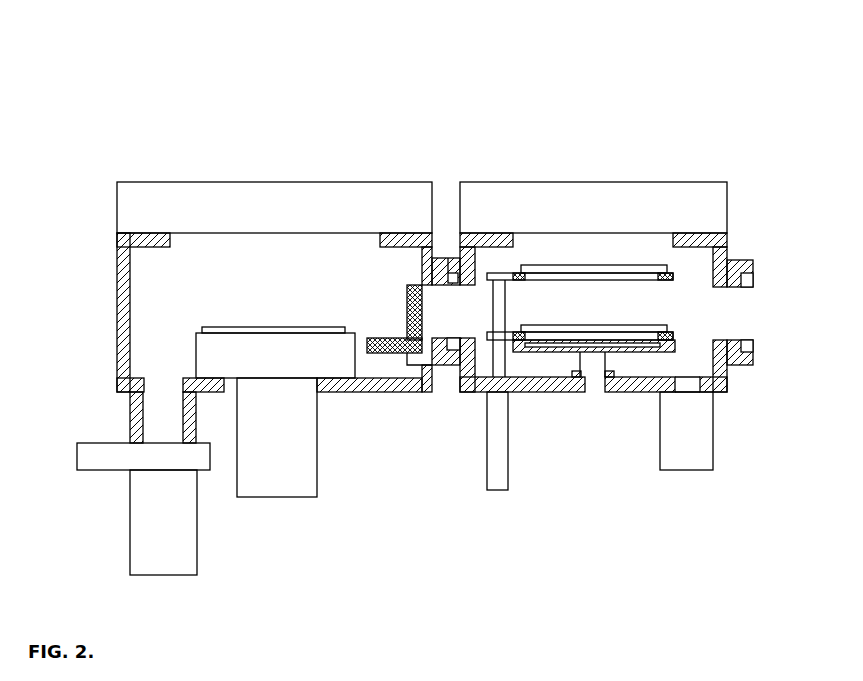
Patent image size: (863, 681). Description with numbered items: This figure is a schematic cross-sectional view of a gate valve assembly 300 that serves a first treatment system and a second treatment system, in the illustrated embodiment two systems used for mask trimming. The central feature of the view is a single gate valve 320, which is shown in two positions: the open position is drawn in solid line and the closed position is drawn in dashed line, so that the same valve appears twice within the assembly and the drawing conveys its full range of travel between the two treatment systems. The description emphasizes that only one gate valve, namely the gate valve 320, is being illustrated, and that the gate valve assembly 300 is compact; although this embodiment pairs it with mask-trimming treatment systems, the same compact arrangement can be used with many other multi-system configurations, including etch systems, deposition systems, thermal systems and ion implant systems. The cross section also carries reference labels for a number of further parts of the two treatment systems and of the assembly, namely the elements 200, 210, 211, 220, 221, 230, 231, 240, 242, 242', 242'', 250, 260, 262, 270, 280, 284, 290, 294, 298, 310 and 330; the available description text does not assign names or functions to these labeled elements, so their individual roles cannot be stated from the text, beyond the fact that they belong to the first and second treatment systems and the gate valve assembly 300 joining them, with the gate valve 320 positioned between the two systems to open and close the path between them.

The processing system 200 is at (462, 98).
The first lid 210 is at (301, 142).
The first chamber body 211 is at (117, 247).
The second lid 220 is at (604, 141).
The second chamber body flange 221 is at (730, 250).
The gas passage 230 is at (448, 258).
The lower flange port 231 is at (750, 366).
The substrate support 240 is at (210, 352).
The substrate 242 is at (273, 307).
The substrate on lower support 242' is at (580, 312).
The substrate on upper support 242'' is at (580, 258).
The lift assembly 250 is at (117, 510).
The first processing region 260 is at (243, 202).
The first processing volume 262 is at (245, 277).
The heater 270 is at (637, 352).
The support shaft 280 is at (698, 435).
The second processing region 284 is at (659, 208).
The lift shaft 290 is at (508, 355).
The transfer passage 294 is at (435, 299).
The second processing volume 298 is at (720, 312).
The gate valve assembly 300 is at (408, 368).
The sliding seal 310 is at (407, 298).
The gate valve 320 is at (380, 337).
The chamber base 330 is at (430, 487).